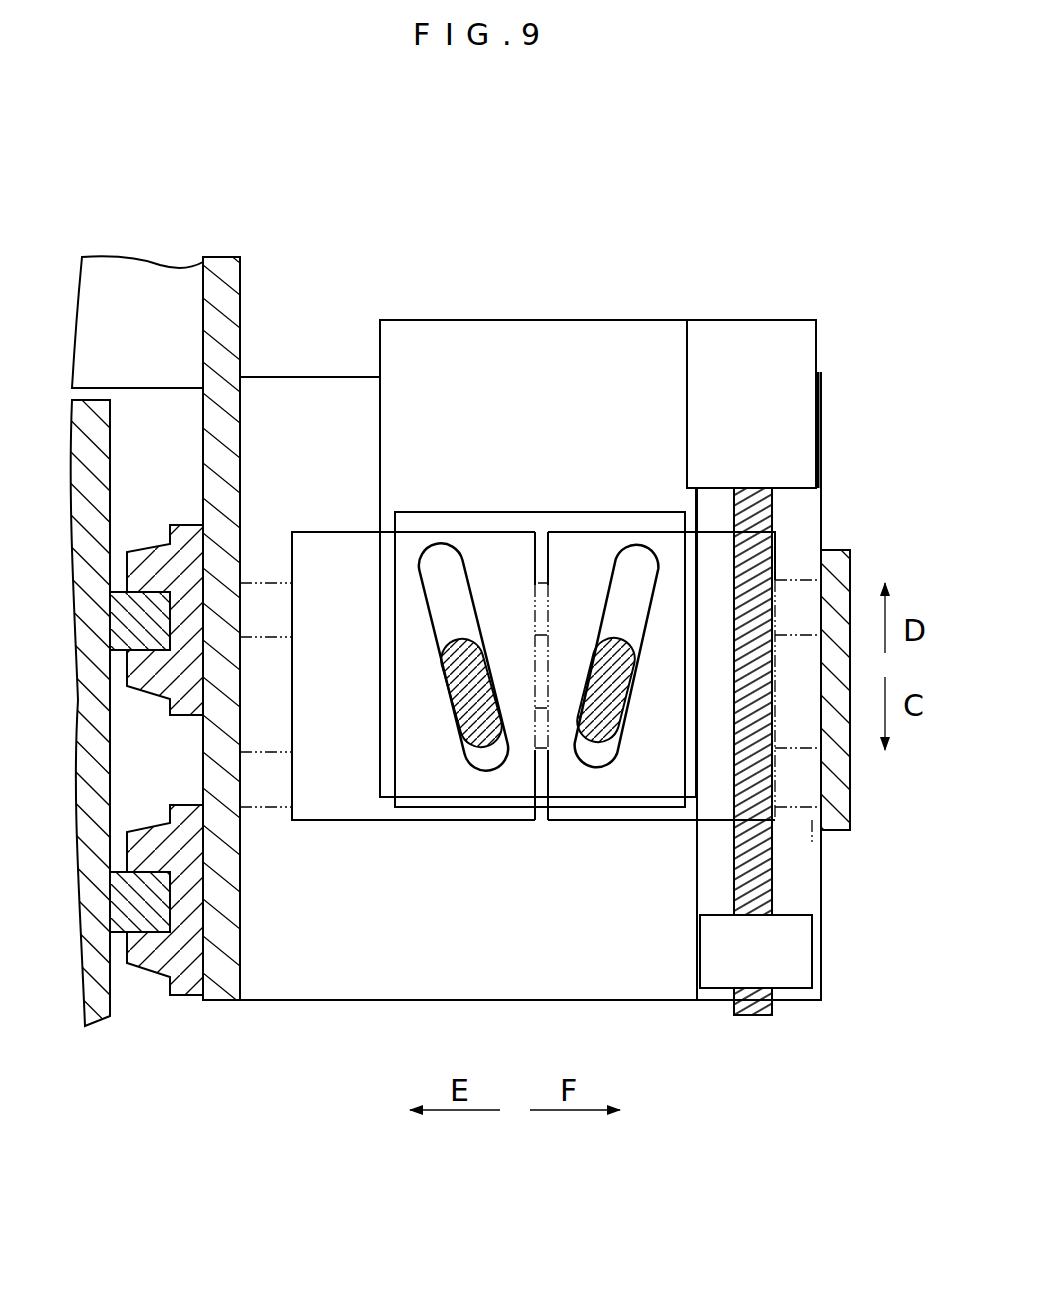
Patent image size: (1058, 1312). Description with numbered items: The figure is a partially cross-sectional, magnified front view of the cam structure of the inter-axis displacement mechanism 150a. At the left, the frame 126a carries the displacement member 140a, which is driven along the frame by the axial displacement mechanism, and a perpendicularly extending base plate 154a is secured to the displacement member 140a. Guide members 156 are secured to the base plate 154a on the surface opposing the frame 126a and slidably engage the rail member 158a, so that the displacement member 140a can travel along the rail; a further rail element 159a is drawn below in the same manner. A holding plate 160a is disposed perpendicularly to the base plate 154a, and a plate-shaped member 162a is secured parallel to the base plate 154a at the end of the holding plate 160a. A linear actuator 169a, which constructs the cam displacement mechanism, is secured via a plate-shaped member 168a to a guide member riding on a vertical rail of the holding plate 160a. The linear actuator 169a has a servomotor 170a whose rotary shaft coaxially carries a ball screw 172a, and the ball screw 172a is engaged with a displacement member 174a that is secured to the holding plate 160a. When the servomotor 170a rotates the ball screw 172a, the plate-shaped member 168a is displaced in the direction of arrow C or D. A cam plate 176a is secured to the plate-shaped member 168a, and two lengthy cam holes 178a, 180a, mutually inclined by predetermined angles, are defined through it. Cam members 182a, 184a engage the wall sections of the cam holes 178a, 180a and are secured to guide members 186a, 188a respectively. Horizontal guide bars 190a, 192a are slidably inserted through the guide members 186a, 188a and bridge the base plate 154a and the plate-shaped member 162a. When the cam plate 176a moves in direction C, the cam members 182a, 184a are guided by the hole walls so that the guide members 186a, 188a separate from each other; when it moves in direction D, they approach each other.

The frame 126a is at (100, 1022).
The displacement member 140a is at (148, 275).
The inter-axis displacement mechanism 150a is at (705, 168).
The base plate 154a is at (218, 262).
The guide member 156 is at (185, 525).
The rail member 158a is at (122, 605).
The guide block 159a is at (125, 923).
The holding plate 160a is at (268, 380).
The plate-shaped member 162a is at (832, 550).
The plate-shaped member 168a is at (500, 333).
The linear actuator 169a is at (826, 352).
The servomotor 170a is at (745, 333).
The ball screw 172a is at (770, 870).
The displacement member 174a is at (800, 965).
The cam plate 176a is at (425, 520).
The cam hole 178a is at (430, 588).
The cam hole 180a is at (619, 565).
The cam member 182a is at (460, 753).
The cam member 184a is at (598, 750).
The guide member 186a is at (345, 820).
The guide member 188a is at (682, 832).
The guide bar 190a is at (793, 540).
The guide bar 192a is at (262, 807).